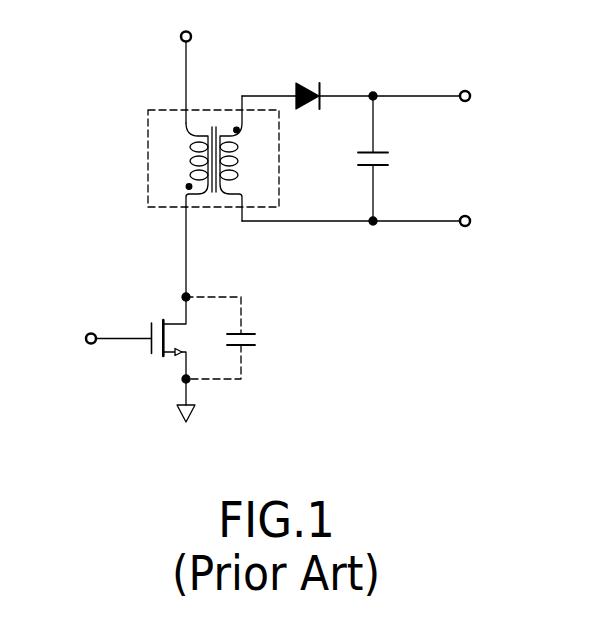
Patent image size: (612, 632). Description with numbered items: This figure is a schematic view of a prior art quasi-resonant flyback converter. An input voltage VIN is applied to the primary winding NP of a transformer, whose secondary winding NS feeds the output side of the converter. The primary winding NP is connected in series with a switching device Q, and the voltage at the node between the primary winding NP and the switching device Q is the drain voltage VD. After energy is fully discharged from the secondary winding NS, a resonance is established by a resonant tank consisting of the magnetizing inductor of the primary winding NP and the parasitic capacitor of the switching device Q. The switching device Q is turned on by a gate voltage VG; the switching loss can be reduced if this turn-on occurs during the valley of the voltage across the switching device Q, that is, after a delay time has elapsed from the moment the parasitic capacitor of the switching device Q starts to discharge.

The input voltage terminal VIN is at (190, 61).
The primary winding NP is at (181, 165).
The secondary winding NS is at (243, 158).
The drain voltage node VD is at (172, 254).
The gate voltage VG is at (102, 338).
The switching device Q is at (179, 340).